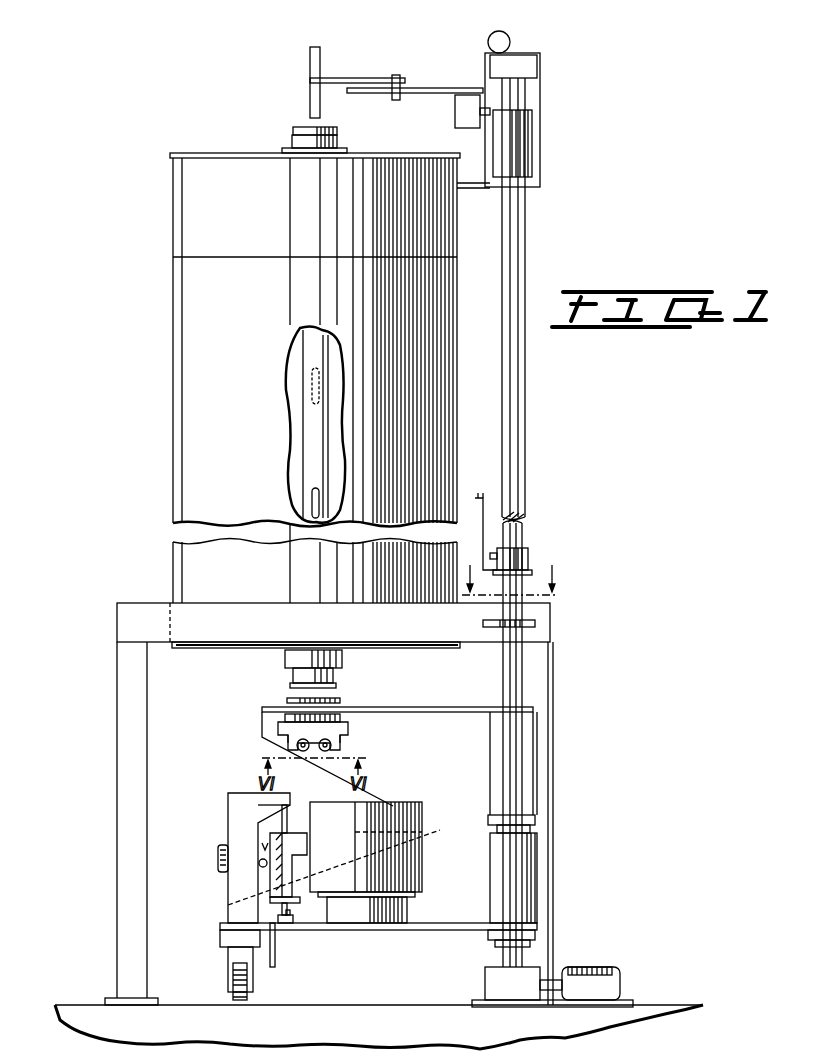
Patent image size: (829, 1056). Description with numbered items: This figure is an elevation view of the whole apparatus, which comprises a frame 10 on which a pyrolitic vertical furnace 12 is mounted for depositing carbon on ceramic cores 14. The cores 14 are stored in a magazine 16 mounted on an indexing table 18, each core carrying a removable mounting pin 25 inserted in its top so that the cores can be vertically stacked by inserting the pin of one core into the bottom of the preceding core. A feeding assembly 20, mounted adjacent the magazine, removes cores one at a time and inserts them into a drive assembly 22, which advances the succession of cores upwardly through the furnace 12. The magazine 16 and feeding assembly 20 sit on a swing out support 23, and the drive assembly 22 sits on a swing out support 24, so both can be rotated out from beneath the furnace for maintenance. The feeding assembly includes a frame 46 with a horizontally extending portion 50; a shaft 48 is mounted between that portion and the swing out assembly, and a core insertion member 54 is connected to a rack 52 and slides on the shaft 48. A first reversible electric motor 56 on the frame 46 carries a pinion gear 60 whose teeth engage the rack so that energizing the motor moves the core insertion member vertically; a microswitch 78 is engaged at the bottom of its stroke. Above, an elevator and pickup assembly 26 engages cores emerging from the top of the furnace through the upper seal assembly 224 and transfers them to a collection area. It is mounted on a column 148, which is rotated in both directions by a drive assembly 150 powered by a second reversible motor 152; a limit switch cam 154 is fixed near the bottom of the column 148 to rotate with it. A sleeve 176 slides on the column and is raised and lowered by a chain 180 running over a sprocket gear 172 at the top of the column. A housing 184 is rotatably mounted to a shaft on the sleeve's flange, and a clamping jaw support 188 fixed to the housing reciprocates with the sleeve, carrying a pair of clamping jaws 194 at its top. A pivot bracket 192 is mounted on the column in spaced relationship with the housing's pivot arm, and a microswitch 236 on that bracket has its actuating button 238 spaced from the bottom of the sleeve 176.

The frame 10 is at (97, 603).
The pyrolitic vertical furnace 12 is at (172, 358).
The ceramic cores 14 is at (308, 460).
The magazine 16 is at (422, 866).
The indexing table 18 is at (407, 911).
The feeding assembly 20 is at (223, 878).
The drive assembly 22 is at (355, 734).
The swing out support 23 is at (462, 930).
The swing out support 24 is at (427, 707).
The removable mounting pins 25 is at (312, 388).
The elevator and pickup assembly 26 is at (548, 83).
The frame 46 is at (228, 818).
The shaft 48 is at (288, 827).
The horizontally extending portion 50 is at (270, 800).
The rack 52 is at (276, 955).
The core insertion member 54 is at (293, 881).
The first reversible electric motor 56 is at (217, 857).
The pinion gear 60 is at (252, 857).
The microswitch 78 is at (292, 921).
The column 148 is at (527, 440).
The drive assembly 150 is at (488, 973).
The second reversible motor 152 is at (603, 967).
The limit switch cam 154 is at (535, 623).
The sprocket gear 172 is at (511, 42).
The sleeve 176 is at (526, 156).
The chain 180 is at (490, 62).
The housing 184 is at (456, 110).
The clamping jaw support 188 is at (400, 88).
The pivot bracket 192 is at (482, 523).
The clamping jaws 194 is at (330, 80).
The upper seal assembly 224 is at (340, 142).
The microswitch 236 is at (528, 556).
The actuating button 238 is at (509, 570).